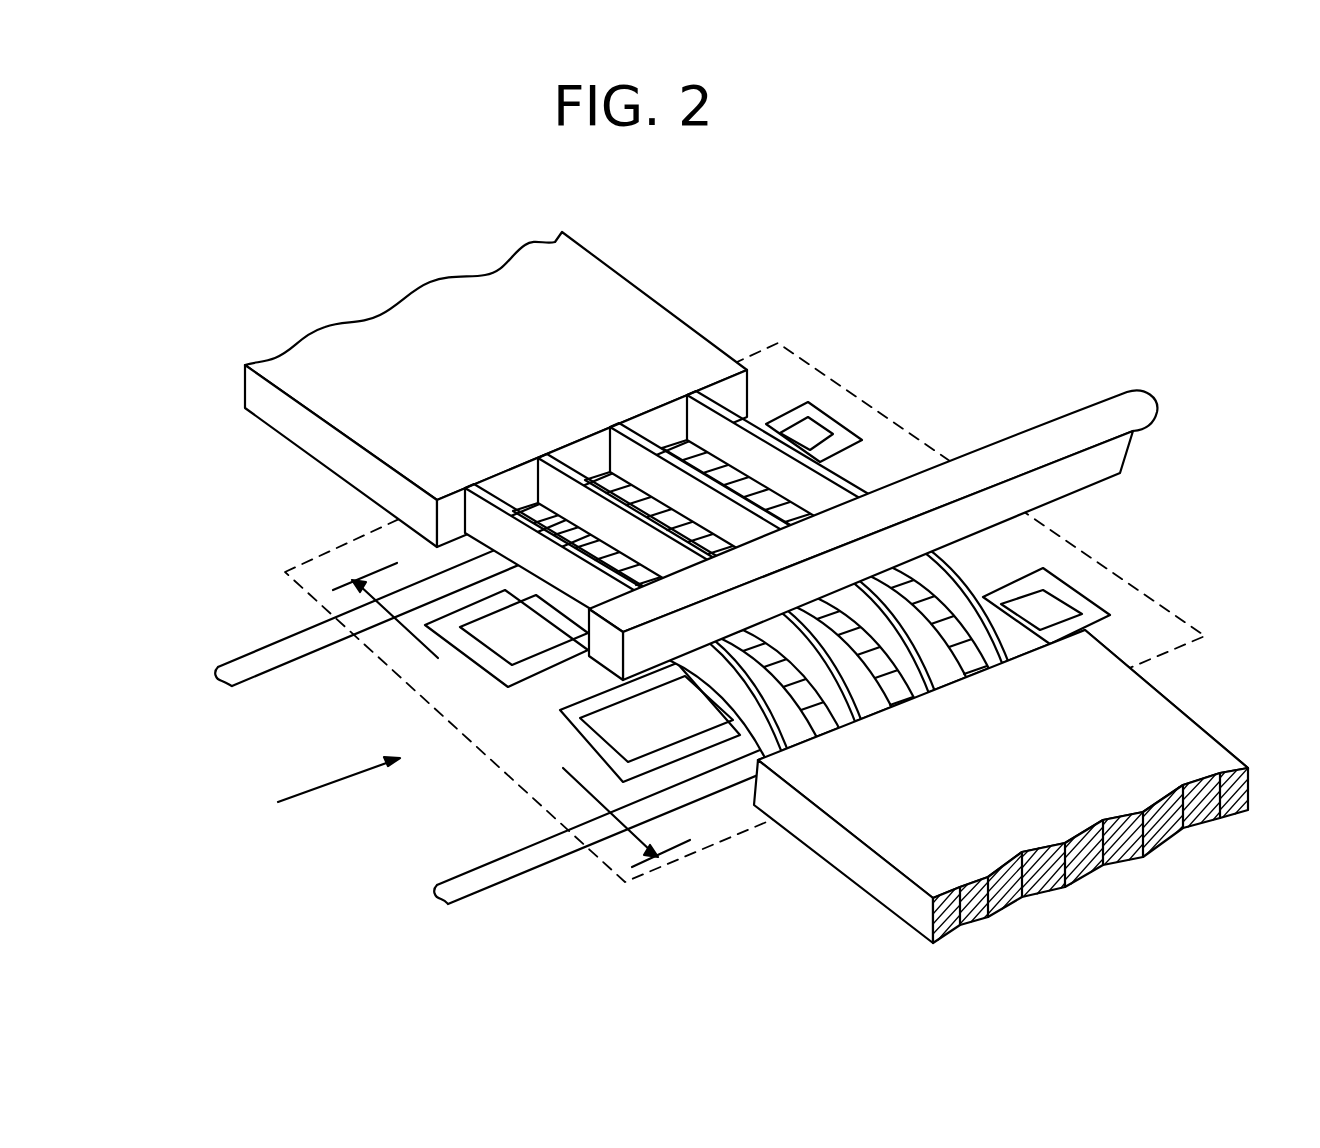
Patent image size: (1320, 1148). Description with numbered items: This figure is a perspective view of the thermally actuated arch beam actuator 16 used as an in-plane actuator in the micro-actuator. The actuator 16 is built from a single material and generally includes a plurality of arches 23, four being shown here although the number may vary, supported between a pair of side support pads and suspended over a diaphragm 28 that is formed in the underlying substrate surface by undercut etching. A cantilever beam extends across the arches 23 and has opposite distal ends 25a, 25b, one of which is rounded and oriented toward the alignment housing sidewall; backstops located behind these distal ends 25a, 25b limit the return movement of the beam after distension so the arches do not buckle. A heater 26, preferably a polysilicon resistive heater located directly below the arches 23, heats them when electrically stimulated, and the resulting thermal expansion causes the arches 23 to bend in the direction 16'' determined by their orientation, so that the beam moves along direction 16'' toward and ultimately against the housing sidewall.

The thermally actuated arch beam actuator 16 is at (945, 268).
The direction of arch bending 16'' is at (484, 742).
The arches 23 is at (750, 420).
The distal end of cantilever beam 25a is at (1143, 392).
The distal end of cantilever beam 25b is at (589, 655).
The heater 26 is at (1070, 578).
The diaphragm 28 is at (898, 420).